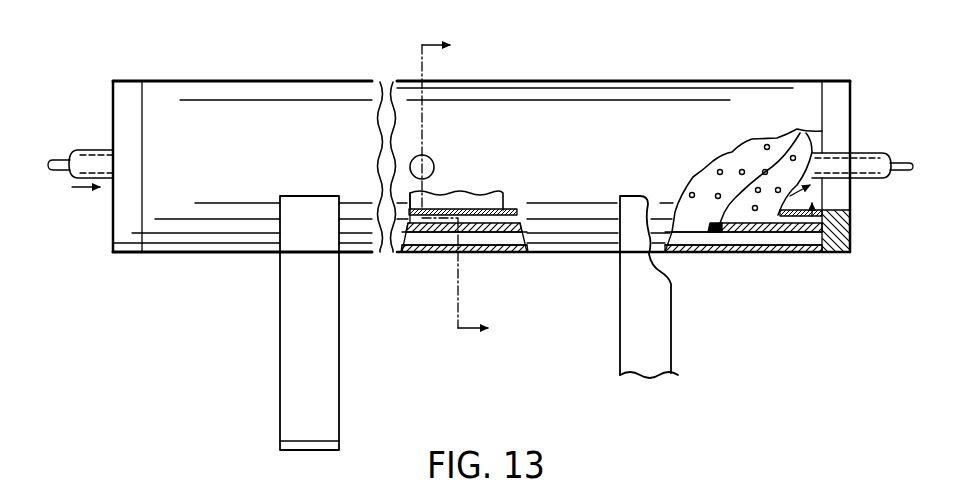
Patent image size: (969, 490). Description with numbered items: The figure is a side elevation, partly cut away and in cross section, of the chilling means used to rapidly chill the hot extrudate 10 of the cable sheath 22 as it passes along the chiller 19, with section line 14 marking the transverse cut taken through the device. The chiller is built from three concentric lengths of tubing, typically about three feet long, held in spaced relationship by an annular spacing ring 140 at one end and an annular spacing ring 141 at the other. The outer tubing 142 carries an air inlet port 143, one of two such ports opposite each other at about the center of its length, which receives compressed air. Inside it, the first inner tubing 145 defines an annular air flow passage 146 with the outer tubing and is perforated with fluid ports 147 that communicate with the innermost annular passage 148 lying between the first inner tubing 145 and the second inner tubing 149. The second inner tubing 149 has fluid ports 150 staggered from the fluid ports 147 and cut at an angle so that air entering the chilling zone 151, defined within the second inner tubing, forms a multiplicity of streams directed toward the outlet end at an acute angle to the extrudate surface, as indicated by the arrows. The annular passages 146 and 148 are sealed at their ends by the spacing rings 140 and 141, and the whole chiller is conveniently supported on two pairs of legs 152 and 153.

The electrical cable plug / connector 10 is at (63, 160).
The section line 14- 14 is at (471, 187).
The heater assembly 19 is at (587, 74).
The electrical cable 22 is at (90, 150).
The annular spacing ring 140 is at (127, 95).
The annular spacing ring 141 is at (835, 92).
The outer tubing 142 is at (423, 250).
The air inlet port 143 is at (428, 160).
The first inner tubing 145 is at (722, 163).
The annular air flow passage 146 is at (470, 240).
The fluid ports 147 is at (492, 228).
The innermost annular passage 148 is at (406, 213).
The second inner tubing 149 is at (455, 210).
The fluid ports 150 is at (474, 210).
The chilling zone 151 is at (508, 232).
The legs 152 is at (303, 205).
The legs 153 is at (632, 200).